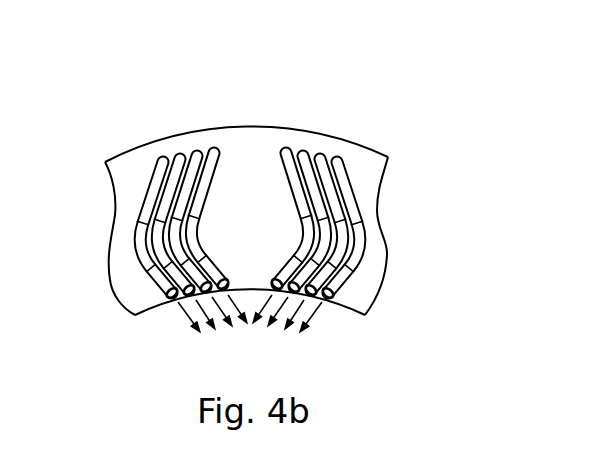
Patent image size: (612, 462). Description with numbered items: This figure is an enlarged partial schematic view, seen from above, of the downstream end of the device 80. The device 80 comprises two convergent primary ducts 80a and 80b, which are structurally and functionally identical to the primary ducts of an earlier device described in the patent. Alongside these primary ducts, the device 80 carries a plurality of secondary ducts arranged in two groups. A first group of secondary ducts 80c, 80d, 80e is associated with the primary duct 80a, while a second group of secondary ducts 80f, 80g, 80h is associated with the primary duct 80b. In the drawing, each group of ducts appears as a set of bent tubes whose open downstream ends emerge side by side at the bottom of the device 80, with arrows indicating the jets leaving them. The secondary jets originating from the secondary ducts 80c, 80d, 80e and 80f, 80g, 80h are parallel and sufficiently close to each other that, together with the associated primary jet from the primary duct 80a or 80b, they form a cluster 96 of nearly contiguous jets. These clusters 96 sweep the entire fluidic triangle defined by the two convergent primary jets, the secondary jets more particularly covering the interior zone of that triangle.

The device 80 is at (243, 108).
The primary duct 80a is at (348, 160).
The primary duct 80b is at (158, 165).
The secondary duct 80c is at (328, 157).
The secondary duct 80d is at (301, 152).
The secondary duct 80e is at (284, 156).
The secondary duct 80f is at (177, 161).
The secondary duct 80g is at (195, 157).
The secondary duct 80h is at (220, 154).
The cluster of jets 96 is at (182, 338).